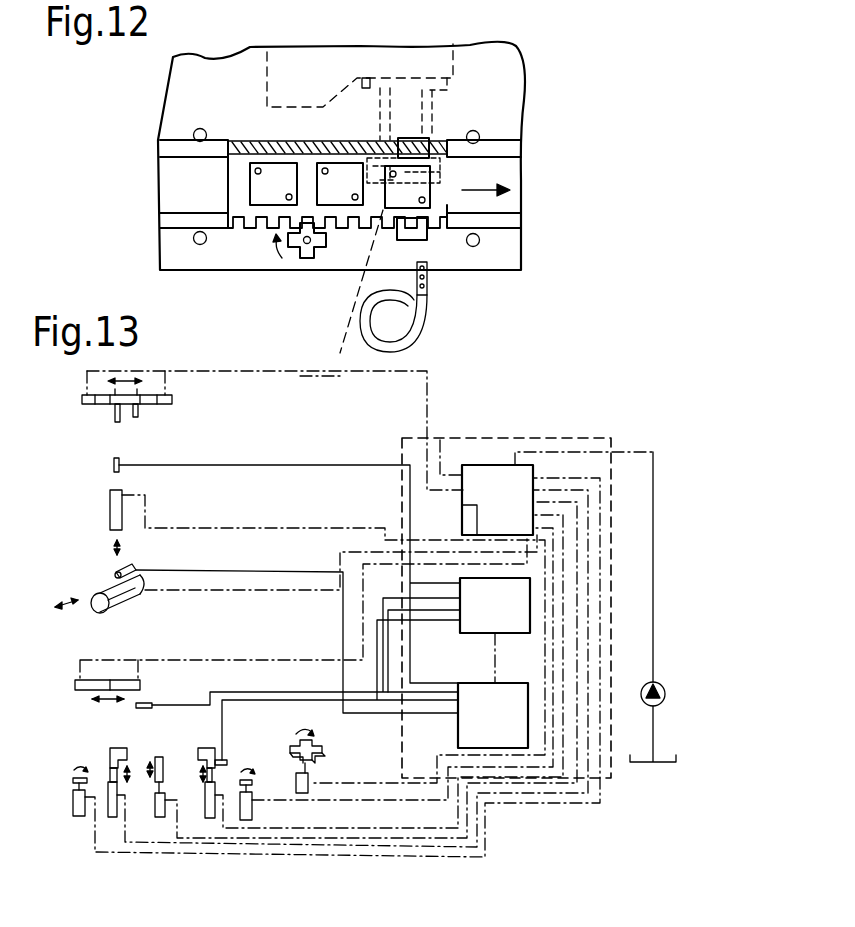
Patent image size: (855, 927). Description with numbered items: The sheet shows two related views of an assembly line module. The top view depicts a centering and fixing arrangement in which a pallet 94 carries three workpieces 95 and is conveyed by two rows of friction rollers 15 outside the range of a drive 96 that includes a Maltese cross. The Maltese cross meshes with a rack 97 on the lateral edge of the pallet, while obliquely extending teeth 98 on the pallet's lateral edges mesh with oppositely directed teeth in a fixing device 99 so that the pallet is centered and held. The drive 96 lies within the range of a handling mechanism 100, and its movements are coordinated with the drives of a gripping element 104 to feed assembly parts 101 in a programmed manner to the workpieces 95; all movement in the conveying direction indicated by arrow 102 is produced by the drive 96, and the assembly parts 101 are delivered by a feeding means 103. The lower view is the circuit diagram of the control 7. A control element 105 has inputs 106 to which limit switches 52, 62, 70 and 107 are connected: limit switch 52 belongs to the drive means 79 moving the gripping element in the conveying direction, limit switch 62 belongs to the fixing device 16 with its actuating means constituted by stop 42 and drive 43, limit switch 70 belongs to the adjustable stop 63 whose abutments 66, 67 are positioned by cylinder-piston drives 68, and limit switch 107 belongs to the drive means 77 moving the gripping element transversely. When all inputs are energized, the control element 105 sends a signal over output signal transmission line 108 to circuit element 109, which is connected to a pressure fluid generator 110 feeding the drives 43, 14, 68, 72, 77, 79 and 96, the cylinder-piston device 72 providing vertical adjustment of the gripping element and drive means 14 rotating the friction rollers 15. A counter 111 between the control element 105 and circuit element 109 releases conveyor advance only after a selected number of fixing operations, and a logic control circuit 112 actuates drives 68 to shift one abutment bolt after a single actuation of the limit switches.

In FIG. 13, the control 7 is at (488, 434).
In FIG. 13, the drive means 14 is at (80, 816).
In FIG. 12, the friction rollers 15 is at (480, 136).
In FIG. 13, the friction rollers 15 is at (78, 778).
In FIG. 13, the fixing device 16 is at (198, 752).
In FIG. 13, the stop 42 is at (164, 772).
In FIG. 13, the drive 43 is at (112, 818).
In FIG. 13, the limit switch 52 is at (152, 705).
In FIG. 13, the limit switch 62 is at (227, 763).
In FIG. 13, the stop 63 is at (144, 407).
In FIG. 13, the abutment 66 is at (116, 422).
In FIG. 13, the abutment 67 is at (140, 413).
In FIG. 13, the cylinder-piston drives 68 is at (86, 403).
In FIG. 13, the limit switch 70 is at (113, 465).
In FIG. 13, the cylinder-piston device 72 is at (118, 516).
In FIG. 13, the drive means 77 is at (108, 606).
In FIG. 13, the drive means 79 is at (90, 686).
In FIG. 12, the pallet 94 is at (238, 176).
In FIG. 12, the workpieces 95 is at (343, 178).
In FIG. 12, the drive 96 is at (320, 256).
In FIG. 13, the drive 96 is at (309, 784).
In FIG. 12, the rack 97 is at (238, 232).
In FIG. 12, the teeth 98 is at (302, 138).
In FIG. 12, the fixing device 99 is at (415, 150).
In FIG. 12, the handling mechanism 100 is at (398, 68).
In FIG. 12, the assembly parts 101 is at (430, 296).
In FIG. 12, the arrow 102 is at (470, 182).
In FIG. 12, the feeding means 103 is at (405, 328).
In FIG. 12, the gripping element 104 is at (348, 288).
In FIG. 13, the control element 105 is at (485, 728).
In FIG. 13, the inputs 106 is at (471, 708).
In FIG. 13, the limit switch 107 is at (122, 566).
In FIG. 13, the output signal transmission line 108 is at (497, 667).
In FIG. 13, the circuit element 109 is at (470, 465).
In FIG. 13, the pressure fluid generator 110 is at (660, 686).
In FIG. 13, the counter 111 is at (510, 622).
In FIG. 13, the logic control circuit 112 is at (468, 520).